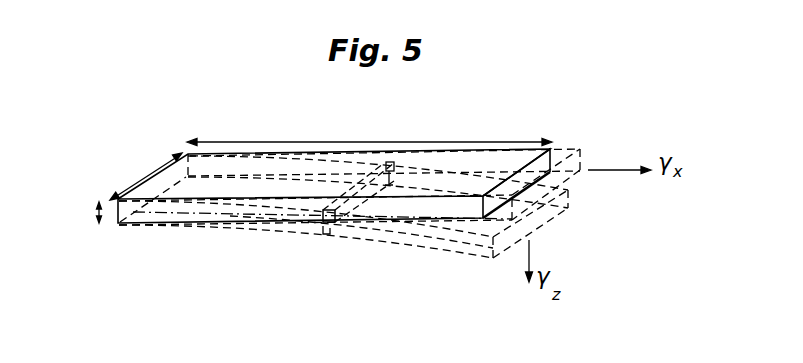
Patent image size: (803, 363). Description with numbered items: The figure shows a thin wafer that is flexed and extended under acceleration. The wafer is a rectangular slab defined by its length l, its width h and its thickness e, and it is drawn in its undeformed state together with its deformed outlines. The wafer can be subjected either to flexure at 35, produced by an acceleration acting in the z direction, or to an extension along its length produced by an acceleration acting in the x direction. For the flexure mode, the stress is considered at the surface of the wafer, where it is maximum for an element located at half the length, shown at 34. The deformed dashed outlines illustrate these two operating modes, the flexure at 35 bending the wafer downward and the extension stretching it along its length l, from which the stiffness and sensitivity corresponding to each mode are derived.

The element 34 is at (324, 234).
The flexure 35 is at (416, 240).
The length l is at (369, 130).
The width h is at (146, 172).
The thickness e is at (90, 213).